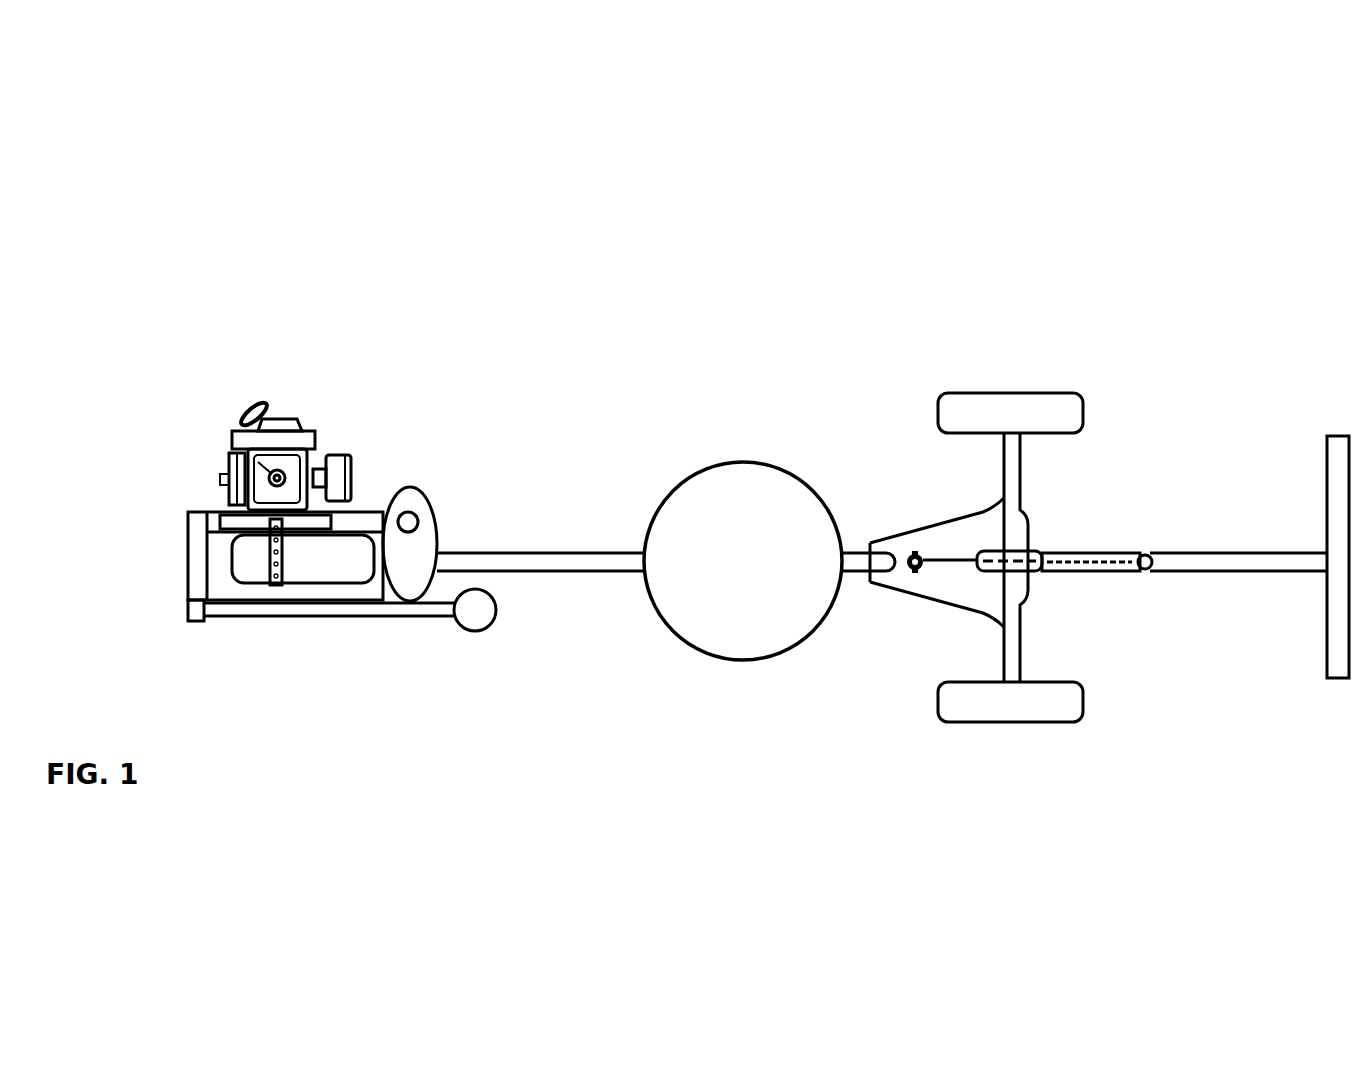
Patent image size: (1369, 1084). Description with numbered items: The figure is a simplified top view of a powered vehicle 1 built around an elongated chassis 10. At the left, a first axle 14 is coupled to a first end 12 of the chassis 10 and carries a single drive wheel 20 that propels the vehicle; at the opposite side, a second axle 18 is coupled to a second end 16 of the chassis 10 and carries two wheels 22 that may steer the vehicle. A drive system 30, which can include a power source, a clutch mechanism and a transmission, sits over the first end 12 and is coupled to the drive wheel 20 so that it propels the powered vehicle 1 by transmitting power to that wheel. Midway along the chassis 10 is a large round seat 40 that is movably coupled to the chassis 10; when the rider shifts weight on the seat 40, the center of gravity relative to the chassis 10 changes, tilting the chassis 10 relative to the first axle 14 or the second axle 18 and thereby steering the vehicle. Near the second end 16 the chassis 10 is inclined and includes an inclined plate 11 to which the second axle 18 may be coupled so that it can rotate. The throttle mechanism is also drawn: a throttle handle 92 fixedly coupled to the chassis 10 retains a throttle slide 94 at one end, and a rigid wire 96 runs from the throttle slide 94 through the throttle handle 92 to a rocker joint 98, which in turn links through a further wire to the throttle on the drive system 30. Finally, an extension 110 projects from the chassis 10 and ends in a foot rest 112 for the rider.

The powered vehicle 1 is at (743, 250).
The chassis 10 is at (370, 523).
The inclined plate 11 is at (942, 593).
The first end 12 is at (202, 453).
The first axle 14 is at (306, 535).
The second end 16 is at (1069, 364).
The second axle 18 is at (1013, 468).
The drive wheel 20 is at (307, 571).
The wheels 22 is at (978, 402).
The drive system 30 is at (329, 415).
The seat 40 is at (717, 465).
The throttle handle 92 is at (1040, 553).
The throttle slide 94 is at (1153, 548).
The rigid wire 96 is at (1003, 552).
The rocker joint 98 is at (907, 570).
The extension 110 is at (1238, 548).
The foot rest 112 is at (1337, 436).